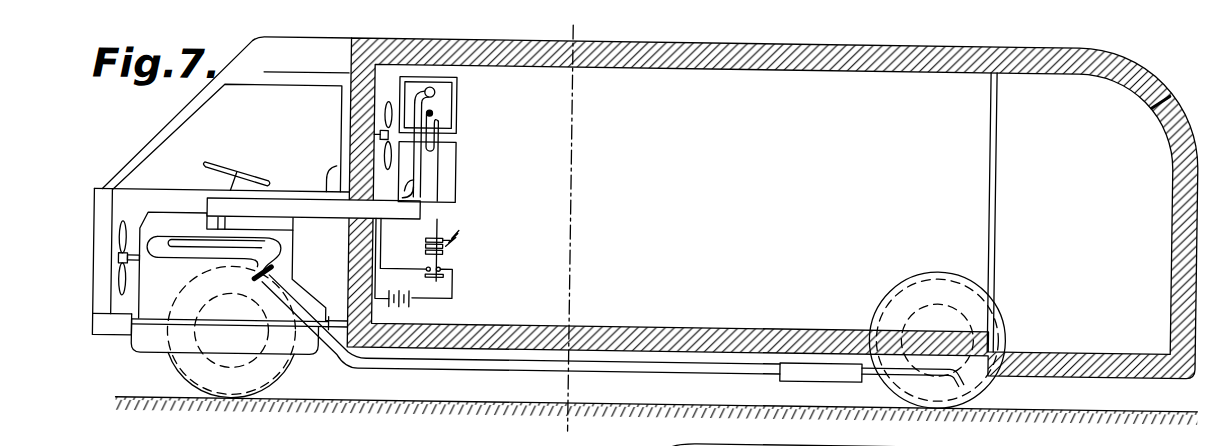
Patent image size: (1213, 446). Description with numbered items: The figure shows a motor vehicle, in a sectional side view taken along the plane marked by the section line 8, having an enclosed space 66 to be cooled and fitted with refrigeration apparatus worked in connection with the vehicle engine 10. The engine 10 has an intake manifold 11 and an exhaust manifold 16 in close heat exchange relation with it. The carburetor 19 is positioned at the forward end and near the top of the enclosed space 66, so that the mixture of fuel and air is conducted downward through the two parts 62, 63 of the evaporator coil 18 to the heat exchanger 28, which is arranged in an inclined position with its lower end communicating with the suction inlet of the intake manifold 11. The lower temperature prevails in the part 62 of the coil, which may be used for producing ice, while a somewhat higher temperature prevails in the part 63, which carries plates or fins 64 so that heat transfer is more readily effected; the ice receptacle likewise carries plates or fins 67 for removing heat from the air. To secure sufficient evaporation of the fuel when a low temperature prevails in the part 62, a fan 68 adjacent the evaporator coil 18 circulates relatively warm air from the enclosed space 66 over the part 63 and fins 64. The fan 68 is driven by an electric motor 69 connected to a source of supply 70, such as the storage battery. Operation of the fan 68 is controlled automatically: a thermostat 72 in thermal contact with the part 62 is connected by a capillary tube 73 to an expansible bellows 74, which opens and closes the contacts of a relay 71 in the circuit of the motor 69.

The section line 8- 8 is at (585, 30).
The engine 10 is at (290, 273).
The intake manifold 11 is at (181, 242).
The exhaust manifold 16 is at (182, 254).
The evaporator coil 18 is at (449, 177).
The carburetor 19 is at (434, 90).
The heat exchanger 28 is at (319, 222).
The part of the evaporator coil 62 is at (436, 119).
The part of the evaporator coil 63 is at (421, 177).
The plates or fins 64 is at (456, 166).
The enclosed space 66 is at (896, 211).
The plates or fins 67 is at (456, 103).
The fan 68 is at (384, 108).
The electric motor 69 is at (379, 135).
The source of supply 70 is at (411, 301).
The relay 71 is at (441, 268).
The thermostat 72 is at (432, 111).
The capillary tube 73 is at (438, 218).
The expansible bellows 74 is at (425, 245).